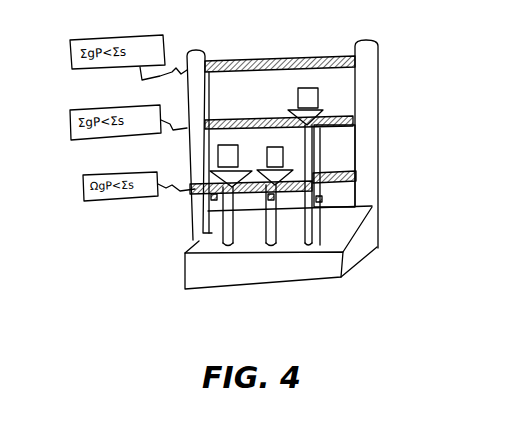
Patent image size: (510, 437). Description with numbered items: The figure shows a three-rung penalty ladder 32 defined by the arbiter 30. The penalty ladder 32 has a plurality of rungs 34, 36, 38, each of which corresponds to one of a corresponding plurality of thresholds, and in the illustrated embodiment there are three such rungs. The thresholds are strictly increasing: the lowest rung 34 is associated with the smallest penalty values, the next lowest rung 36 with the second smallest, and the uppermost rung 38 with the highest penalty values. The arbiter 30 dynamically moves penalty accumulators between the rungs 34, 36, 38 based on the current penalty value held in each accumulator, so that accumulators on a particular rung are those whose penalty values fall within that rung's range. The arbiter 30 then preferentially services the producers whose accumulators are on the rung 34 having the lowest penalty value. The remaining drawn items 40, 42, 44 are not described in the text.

The arbiter 30 is at (281, 248).
The penalty ladder 32 is at (380, 112).
The lowest rung 34 is at (334, 166).
The next lowest rung 36 is at (280, 45).
The uppermost rung 38 is at (231, 138).
The upper hopper 40 is at (297, 97).
The middle hopper 42 is at (269, 159).
The support leg 44 is at (276, 185).